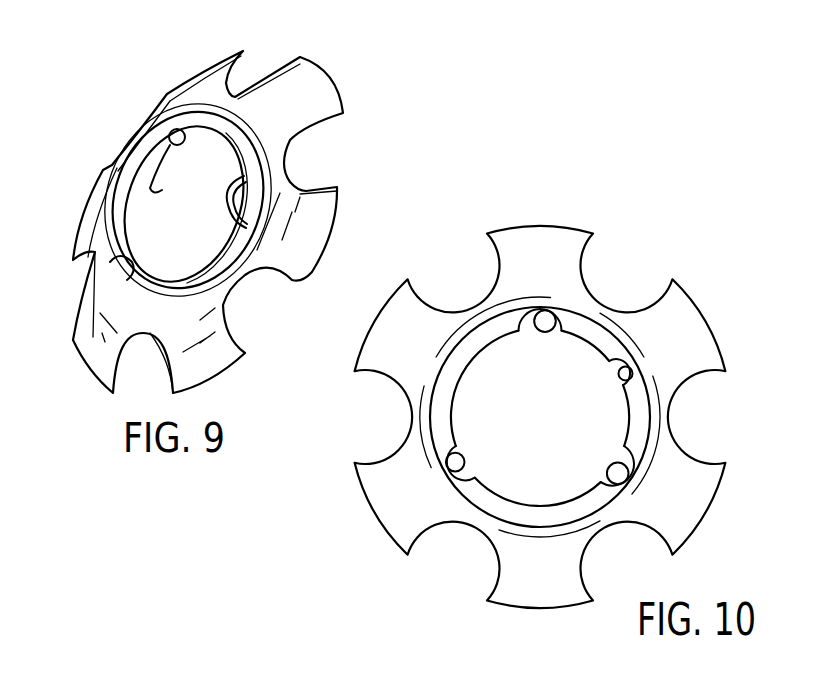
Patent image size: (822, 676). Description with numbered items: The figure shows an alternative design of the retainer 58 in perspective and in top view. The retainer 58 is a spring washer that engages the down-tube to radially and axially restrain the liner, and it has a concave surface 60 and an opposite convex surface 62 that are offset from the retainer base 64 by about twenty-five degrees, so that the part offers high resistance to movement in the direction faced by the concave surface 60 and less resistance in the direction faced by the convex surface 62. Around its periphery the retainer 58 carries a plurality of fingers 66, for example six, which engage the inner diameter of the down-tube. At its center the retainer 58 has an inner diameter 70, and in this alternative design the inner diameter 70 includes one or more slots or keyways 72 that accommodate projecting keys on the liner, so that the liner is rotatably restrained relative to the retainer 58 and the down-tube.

In FIG. 9, the retainer 58 is at (362, 128).
In FIG. 10, the retainer 58 is at (512, 198).
In FIG. 9, the concave surface 60 is at (313, 216).
In FIG. 9, the convex surface 62 is at (207, 57).
In FIG. 9, the retainer base 64 is at (222, 276).
In FIG. 10, the retainer base 64 is at (443, 416).
In FIG. 9, the fingers 66 is at (311, 97).
In FIG. 10, the fingers 66 is at (680, 306).
In FIG. 9, the inner diameter 70 is at (138, 168).
In FIG. 10, the inner diameter 70 is at (619, 384).
In FIG. 9, the slots or keyways 72 is at (158, 148).
In FIG. 10, the slots or keyways 72 is at (559, 331).